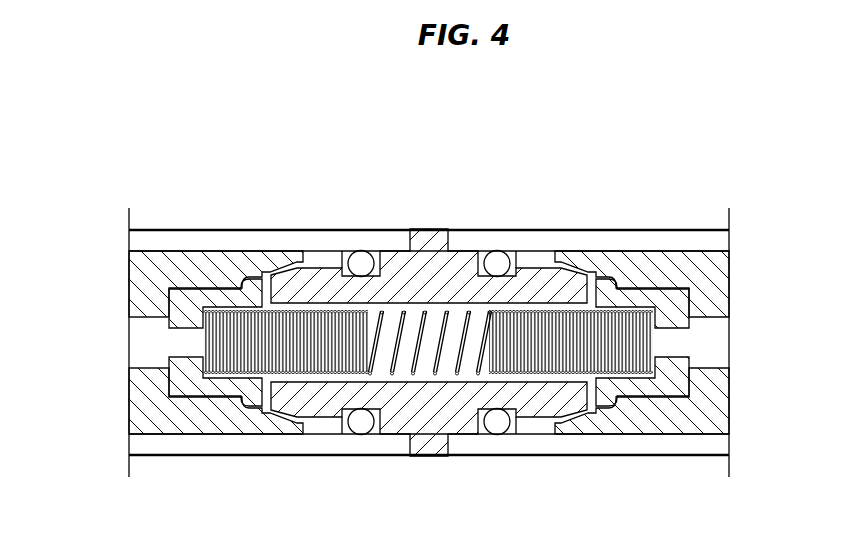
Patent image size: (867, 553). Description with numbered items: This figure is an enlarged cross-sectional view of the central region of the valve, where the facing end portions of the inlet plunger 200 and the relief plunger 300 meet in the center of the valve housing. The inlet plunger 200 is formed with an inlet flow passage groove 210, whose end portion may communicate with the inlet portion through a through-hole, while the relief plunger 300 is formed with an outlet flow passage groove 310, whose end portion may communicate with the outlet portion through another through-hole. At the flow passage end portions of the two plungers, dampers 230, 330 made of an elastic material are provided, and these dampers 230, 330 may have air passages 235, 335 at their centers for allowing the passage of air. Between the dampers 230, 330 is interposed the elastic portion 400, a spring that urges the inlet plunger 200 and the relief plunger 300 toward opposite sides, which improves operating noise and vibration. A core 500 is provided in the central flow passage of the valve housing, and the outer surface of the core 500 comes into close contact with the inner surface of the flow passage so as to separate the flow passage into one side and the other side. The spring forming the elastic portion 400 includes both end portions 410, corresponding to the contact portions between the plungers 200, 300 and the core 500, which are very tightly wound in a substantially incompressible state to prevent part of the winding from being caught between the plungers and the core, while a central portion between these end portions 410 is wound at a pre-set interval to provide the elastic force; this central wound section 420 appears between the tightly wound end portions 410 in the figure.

The inlet plunger 200 is at (656, 267).
The inlet flow passage groove 210 is at (711, 333).
The damper 230 is at (662, 386).
The air passage 235 is at (686, 345).
The relief plunger 300 is at (202, 267).
The outlet flow passage groove 310 is at (147, 333).
The damper 330 is at (197, 386).
The air passage 335 is at (172, 345).
The elastic portion 400 is at (402, 310).
The end portions 410 is at (552, 308).
The stretched coil portion 420 is at (421, 355).
The core 500 is at (428, 270).